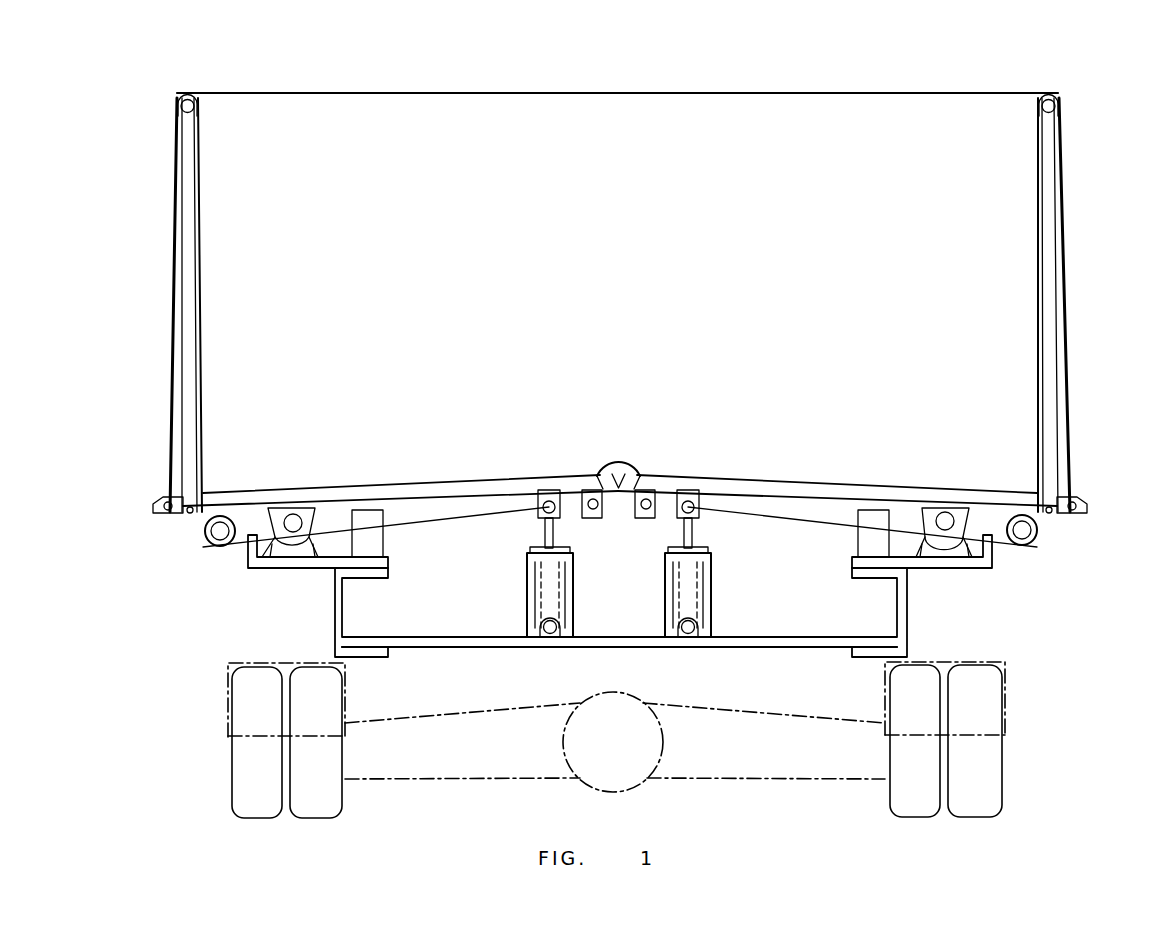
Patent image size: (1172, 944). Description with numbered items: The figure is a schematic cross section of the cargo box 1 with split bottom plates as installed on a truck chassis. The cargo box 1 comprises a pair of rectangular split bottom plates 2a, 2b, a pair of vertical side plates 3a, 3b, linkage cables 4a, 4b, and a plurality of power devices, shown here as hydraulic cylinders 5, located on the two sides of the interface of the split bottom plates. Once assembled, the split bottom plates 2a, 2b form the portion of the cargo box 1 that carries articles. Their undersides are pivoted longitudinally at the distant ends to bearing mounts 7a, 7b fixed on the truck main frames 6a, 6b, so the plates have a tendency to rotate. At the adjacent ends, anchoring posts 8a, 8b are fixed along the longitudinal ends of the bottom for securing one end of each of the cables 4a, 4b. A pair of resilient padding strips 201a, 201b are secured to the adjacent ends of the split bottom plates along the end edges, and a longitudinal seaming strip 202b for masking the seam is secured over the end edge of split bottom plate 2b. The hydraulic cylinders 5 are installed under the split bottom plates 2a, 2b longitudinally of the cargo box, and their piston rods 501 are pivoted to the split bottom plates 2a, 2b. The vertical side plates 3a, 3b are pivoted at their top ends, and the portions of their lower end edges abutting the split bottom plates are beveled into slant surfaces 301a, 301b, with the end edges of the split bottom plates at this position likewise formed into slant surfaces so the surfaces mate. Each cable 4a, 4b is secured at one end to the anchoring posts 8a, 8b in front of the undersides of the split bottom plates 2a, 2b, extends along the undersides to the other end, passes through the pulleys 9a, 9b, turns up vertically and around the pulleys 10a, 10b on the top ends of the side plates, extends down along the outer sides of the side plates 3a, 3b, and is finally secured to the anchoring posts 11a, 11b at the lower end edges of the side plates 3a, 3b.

The cargo box 1 is at (640, 307).
The split bottom plate 2a is at (418, 487).
The split bottom plate 2b is at (822, 487).
The resilient padding strip 201a is at (600, 473).
The resilient padding strip 201b is at (640, 473).
The longitudinal seaming strip 202b is at (620, 462).
The vertical side plate 3a is at (198, 142).
The vertical side plate 3b is at (1038, 160).
The linkage cable 4a is at (172, 383).
The linkage cable 4b is at (1068, 383).
The hydraulic cylinder 5 is at (527, 598).
The piston rod 501 is at (540, 528).
The truck main frame 6a is at (333, 620).
The truck main frame 6b is at (908, 618).
The bearing mount 7a is at (293, 552).
The bearing mount 7b is at (960, 553).
The anchoring post 8a is at (594, 521).
The anchoring post 8b is at (646, 521).
The pulley 9a is at (212, 548).
The pulley 9b is at (1028, 547).
The pulley 10a is at (188, 97).
The pulley 10b is at (1046, 97).
The anchoring post 11a is at (156, 499).
The anchoring post 11b is at (1084, 498).
The slant surface 301a is at (190, 515).
The slant surface 301b is at (1050, 514).